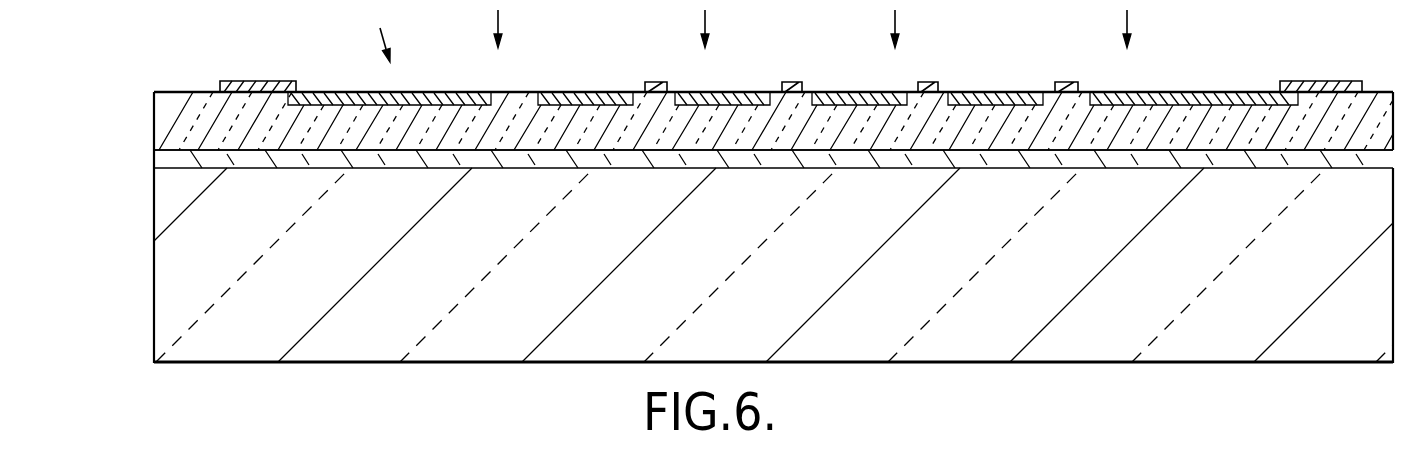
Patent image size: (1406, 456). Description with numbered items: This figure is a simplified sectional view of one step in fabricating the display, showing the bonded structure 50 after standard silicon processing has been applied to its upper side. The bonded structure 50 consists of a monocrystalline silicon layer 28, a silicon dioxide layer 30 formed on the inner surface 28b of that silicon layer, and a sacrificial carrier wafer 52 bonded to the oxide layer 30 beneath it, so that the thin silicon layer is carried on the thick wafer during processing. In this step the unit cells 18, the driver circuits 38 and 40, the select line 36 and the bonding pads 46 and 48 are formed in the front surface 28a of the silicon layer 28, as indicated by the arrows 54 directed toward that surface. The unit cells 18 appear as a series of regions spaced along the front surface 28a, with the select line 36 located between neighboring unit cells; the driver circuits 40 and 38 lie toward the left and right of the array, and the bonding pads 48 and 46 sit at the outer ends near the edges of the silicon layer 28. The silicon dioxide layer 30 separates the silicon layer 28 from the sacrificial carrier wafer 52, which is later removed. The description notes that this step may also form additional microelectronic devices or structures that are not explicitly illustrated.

The unit cells 18 is at (588, 92).
The monocrystalline silicon layer 28 is at (154, 128).
The front surface 28a is at (167, 92).
The inner surface 28b is at (196, 152).
The silicon dioxide layer 30 is at (168, 163).
The select line 36 is at (648, 80).
The driver circuit 38 is at (1223, 92).
The driver circuit 40 is at (325, 100).
The bonding pad 46 is at (1305, 80).
The bonding pad 48 is at (244, 80).
The bonded structure 50 is at (379, 32).
The sacrificial carrier wafer 52 is at (153, 273).
The arrows 54 is at (1132, 18).